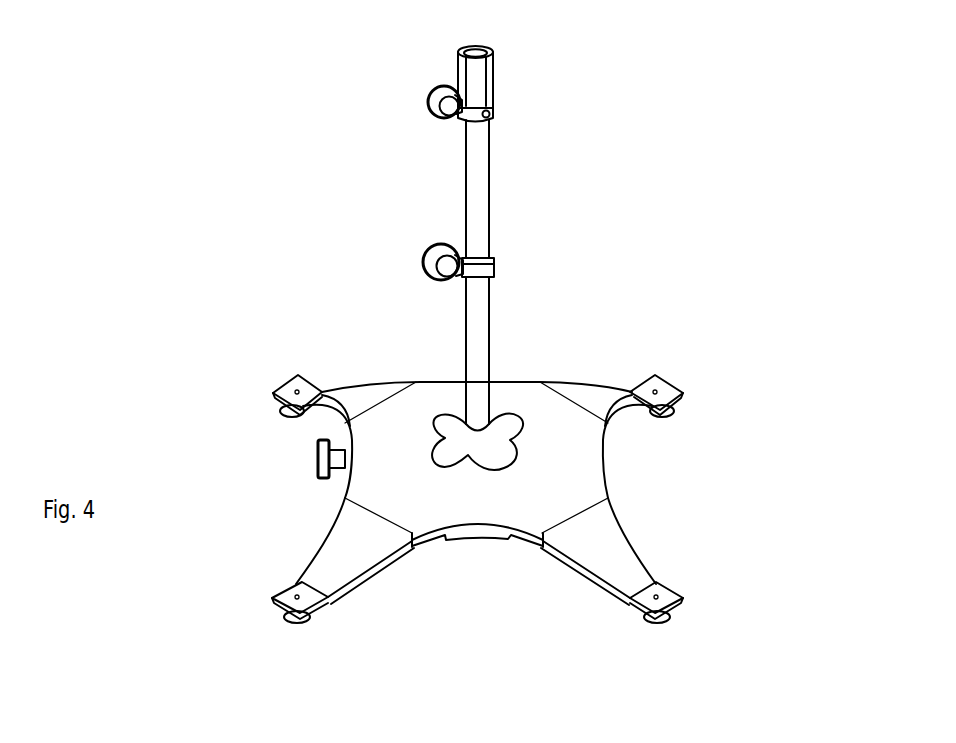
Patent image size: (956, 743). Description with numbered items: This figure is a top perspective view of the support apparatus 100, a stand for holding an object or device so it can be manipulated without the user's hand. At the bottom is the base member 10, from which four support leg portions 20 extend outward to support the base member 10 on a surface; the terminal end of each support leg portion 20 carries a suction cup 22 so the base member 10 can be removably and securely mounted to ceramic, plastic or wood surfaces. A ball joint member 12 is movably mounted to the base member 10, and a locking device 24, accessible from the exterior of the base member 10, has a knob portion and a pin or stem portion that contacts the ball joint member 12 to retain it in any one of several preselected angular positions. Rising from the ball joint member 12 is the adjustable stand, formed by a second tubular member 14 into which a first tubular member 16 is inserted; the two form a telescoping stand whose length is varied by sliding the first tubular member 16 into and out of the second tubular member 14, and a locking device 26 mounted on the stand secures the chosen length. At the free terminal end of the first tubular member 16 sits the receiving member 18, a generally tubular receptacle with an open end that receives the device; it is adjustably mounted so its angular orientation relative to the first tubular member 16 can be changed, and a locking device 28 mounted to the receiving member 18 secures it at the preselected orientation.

The support apparatus 100 is at (752, 132).
The base member 10 is at (418, 390).
The ball joint member 12 is at (493, 443).
The second tubular member 14 is at (490, 365).
The first tubular member 16 is at (490, 188).
The receiving member 18 is at (497, 78).
The support leg portions 20 is at (358, 392).
The suction cups 22 is at (290, 406).
The locking device 24 is at (318, 470).
The locking device 26 is at (427, 256).
The locking device 28 is at (430, 110).